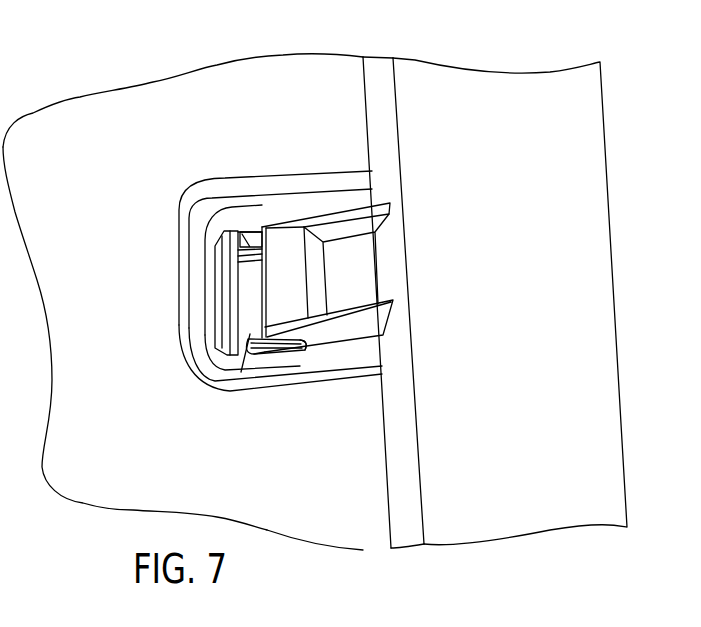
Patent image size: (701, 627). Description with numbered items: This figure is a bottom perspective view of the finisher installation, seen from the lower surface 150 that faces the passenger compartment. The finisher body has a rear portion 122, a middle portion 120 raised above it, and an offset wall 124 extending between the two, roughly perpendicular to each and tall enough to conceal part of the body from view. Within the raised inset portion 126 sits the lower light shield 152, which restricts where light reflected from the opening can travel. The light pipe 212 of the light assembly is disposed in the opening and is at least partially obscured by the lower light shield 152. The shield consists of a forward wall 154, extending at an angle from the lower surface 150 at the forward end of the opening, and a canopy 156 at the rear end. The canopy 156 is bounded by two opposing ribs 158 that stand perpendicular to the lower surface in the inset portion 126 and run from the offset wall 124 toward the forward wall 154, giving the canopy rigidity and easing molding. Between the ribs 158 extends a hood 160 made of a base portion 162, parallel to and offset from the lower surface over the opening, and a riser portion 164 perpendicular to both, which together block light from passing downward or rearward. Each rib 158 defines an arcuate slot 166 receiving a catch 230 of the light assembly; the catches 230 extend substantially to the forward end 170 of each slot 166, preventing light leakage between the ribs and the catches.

The middle portion 120 is at (335, 529).
The rear portion 122 is at (567, 263).
The offset wall 124 is at (381, 69).
The inset portion 126 is at (220, 171).
The lower surface 150 is at (164, 97).
The lower light shield 152 is at (224, 219).
The forward wall 154 is at (230, 259).
The canopy 156 is at (287, 212).
The ribs 158 is at (369, 223).
The hood 160 is at (258, 304).
The base portion 162 is at (291, 306).
The riser portion 164 is at (318, 277).
The slot 166 is at (309, 345).
The forward end of slot 170 is at (285, 352).
The light pipe 212 is at (256, 268).
The catch 230 is at (246, 233).